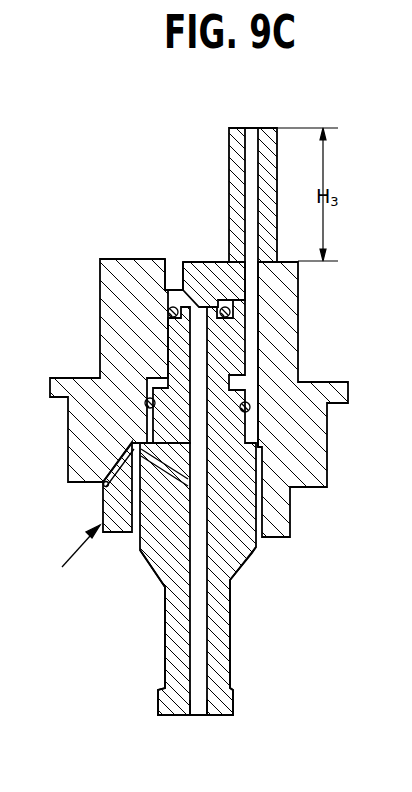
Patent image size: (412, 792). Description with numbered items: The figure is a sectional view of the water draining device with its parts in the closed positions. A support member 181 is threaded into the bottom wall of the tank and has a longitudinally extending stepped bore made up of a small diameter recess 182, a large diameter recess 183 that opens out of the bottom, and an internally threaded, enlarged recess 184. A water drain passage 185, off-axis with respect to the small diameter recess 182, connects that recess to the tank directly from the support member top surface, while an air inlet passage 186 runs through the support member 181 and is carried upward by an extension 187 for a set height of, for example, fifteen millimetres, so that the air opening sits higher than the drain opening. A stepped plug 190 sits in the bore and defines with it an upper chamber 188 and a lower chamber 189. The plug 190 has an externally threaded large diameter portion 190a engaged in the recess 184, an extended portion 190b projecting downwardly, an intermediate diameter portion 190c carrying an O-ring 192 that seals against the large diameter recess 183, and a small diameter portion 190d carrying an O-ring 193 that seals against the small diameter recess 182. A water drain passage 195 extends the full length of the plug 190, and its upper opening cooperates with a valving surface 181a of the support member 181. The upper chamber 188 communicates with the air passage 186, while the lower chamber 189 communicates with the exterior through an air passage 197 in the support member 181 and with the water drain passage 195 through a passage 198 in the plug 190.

The support member 181 is at (85, 452).
The valving surface 181a is at (183, 292).
The small diameter recess 182 is at (232, 282).
The large diameter recess 183 is at (143, 430).
The internally threaded enlarged recess 184 is at (133, 543).
The water drain passage 185 is at (168, 270).
The air inlet passage 186 is at (256, 130).
The extension 187 is at (233, 155).
The upper chamber 188 is at (150, 383).
The lower chamber 189 is at (228, 423).
The stepped plug 190 is at (63, 558).
The large diameter portion 190a is at (230, 565).
The extended portion 190b is at (220, 647).
The intermediate diameter portion 190c is at (272, 432).
The small diameter portion 190d is at (252, 335).
The O-ring 192 is at (230, 313).
The O-ring 193 is at (249, 402).
The water drain passage 195 is at (200, 700).
The air passage 197 is at (103, 484).
The passage 198 is at (188, 474).